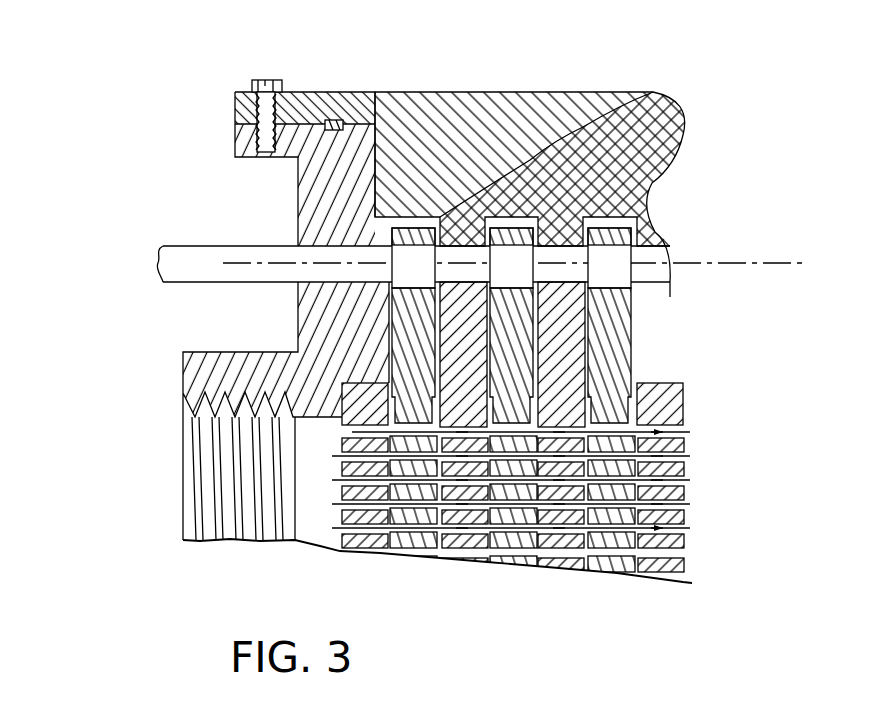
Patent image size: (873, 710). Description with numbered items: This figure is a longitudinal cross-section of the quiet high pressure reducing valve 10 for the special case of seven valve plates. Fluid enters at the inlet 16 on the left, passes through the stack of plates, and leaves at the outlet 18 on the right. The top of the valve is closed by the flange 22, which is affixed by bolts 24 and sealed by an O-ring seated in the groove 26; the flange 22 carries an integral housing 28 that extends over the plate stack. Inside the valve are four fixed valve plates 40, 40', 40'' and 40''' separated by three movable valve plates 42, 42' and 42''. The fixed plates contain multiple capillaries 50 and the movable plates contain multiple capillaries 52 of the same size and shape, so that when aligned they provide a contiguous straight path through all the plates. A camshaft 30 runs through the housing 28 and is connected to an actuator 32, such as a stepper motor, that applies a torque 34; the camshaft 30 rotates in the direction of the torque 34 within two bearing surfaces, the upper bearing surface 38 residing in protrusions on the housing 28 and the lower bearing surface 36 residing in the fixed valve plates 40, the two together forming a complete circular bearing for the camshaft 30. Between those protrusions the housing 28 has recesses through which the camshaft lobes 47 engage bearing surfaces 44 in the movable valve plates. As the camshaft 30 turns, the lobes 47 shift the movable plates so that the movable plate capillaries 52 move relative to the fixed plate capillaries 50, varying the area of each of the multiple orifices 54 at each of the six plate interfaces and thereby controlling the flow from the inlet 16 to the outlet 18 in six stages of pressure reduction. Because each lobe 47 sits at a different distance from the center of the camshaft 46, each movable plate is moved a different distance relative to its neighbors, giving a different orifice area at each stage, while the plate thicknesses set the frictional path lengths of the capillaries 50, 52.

The quiet high pressure reducing valve 10 is at (503, 86).
The fluid inlet 16 is at (176, 455).
The fluid outlet 18 is at (700, 487).
The flange 22 is at (437, 108).
The bolt 24 is at (258, 108).
The groove 26 is at (331, 118).
The housing 28 is at (645, 175).
The camshaft 30 is at (612, 282).
The actuator 32 is at (150, 263).
The torque 34 is at (182, 203).
The lower bearing surface 36 is at (490, 313).
The upper bearing surface 38 is at (467, 235).
The fixed valve plate 40 is at (366, 516).
The fixed valve plate 40' is at (466, 524).
The fixed valve plate 40'' is at (567, 527).
The fixed valve plate 40''' is at (670, 531).
The movable valve plate 42 is at (413, 527).
The movable valve plate 42' is at (517, 532).
The movable valve plate 42'' is at (616, 540).
The bearing surface 44 is at (423, 235).
The center of the camshaft 46 is at (535, 262).
The camshaft lobe 47 is at (420, 282).
The capillaries of fixed valve plate 50 is at (350, 432).
The capillaries of movable valve plate 52 is at (350, 463).
The orifice 54 is at (383, 433).